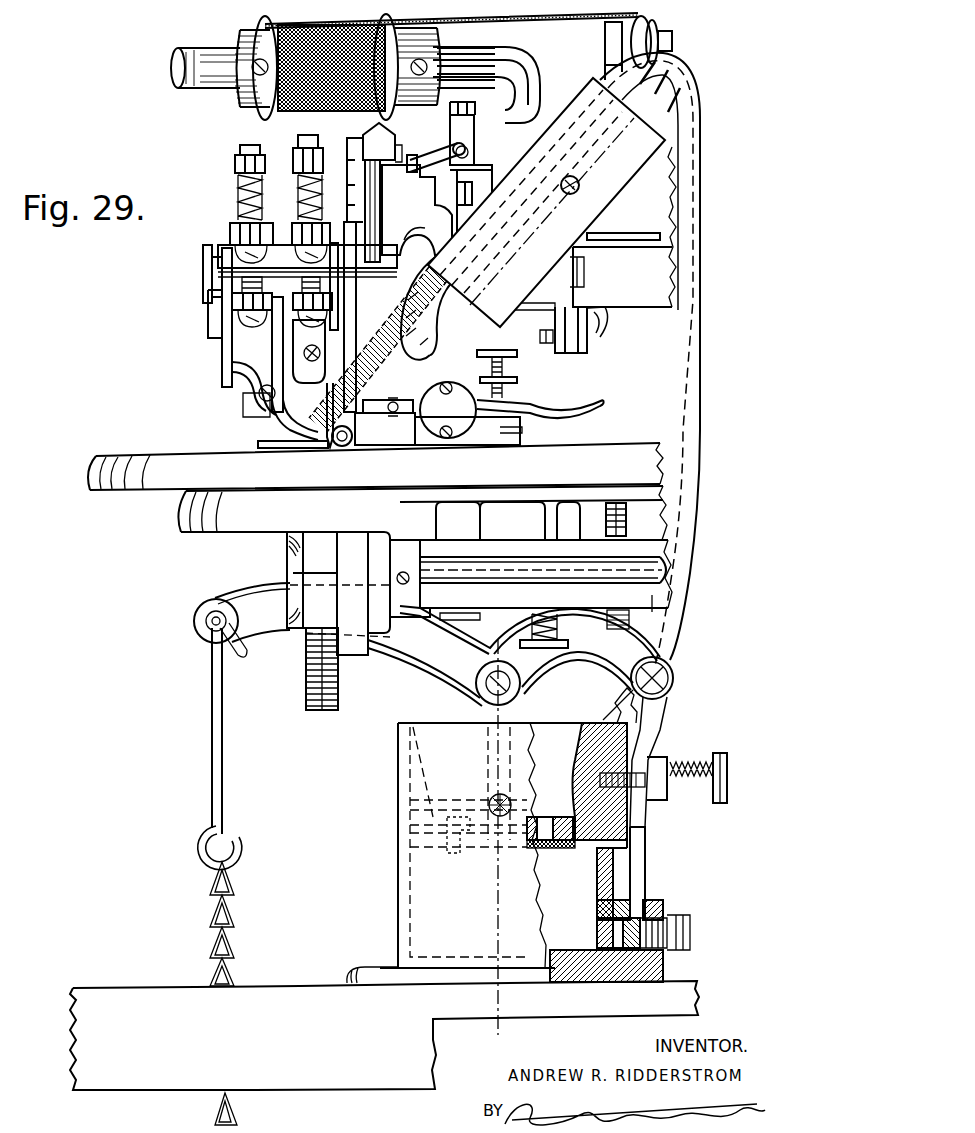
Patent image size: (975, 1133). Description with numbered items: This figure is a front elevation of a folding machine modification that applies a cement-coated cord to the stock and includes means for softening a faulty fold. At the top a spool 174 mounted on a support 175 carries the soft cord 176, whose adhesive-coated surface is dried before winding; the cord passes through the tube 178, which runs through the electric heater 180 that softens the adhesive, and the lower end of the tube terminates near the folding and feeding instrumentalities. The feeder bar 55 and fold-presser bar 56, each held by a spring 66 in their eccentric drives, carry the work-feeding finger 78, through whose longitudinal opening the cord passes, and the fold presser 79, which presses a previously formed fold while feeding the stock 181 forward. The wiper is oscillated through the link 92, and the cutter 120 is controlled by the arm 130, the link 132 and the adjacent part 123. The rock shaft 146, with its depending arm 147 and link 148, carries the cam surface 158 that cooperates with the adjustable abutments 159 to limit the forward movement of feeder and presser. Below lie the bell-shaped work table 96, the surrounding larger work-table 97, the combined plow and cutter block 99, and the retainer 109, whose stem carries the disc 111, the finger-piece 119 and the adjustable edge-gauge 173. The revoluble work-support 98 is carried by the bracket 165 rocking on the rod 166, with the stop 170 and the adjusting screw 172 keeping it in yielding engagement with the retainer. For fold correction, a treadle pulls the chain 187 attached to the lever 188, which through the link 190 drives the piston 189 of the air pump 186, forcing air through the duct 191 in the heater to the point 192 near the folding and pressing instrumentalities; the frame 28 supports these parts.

The frame 28 is at (384, 848).
The feeder bar 55 is at (250, 347).
The fold-presser bar 56 is at (314, 317).
The spring 66 is at (240, 197).
The work-feeding finger 78 is at (283, 437).
The fold presser 79 is at (250, 394).
The link 92 is at (470, 137).
The work table 96 is at (230, 512).
The larger work-table 97 is at (177, 478).
The revoluble work-support 98 is at (294, 690).
The combined plow and cutter block 99 is at (361, 436).
The retainer 109 is at (321, 448).
The disc 111 is at (448, 410).
The finger-piece 119 is at (598, 400).
The cutter 120 is at (353, 410).
The lever 123 is at (376, 205).
The arm 130 is at (385, 143).
The link 132 is at (358, 168).
The rock shaft 146 is at (387, 337).
The depending arm 147 is at (571, 347).
The link 148 is at (606, 323).
The cam surface 158 is at (327, 271).
The adjustable abutment 159 is at (240, 281).
The bracket 165 is at (651, 598).
The rod 166 is at (522, 573).
The stop 170 is at (627, 521).
The adjusting screw 172 is at (562, 645).
The adjustable edge-gauge 173 is at (391, 409).
The thread spool 174 is at (255, 44).
The support 175 is at (205, 56).
The soft cord 176 is at (468, 40).
The tube 178 is at (441, 359).
The heater 180 is at (648, 143).
The stock 181 is at (356, 448).
The air pump 186 is at (565, 873).
The chain 187 is at (237, 1116).
The lever 188 is at (440, 652).
The piston 189 is at (572, 767).
The link 190 is at (498, 707).
The duct 191 is at (646, 838).
The point 192 is at (431, 339).